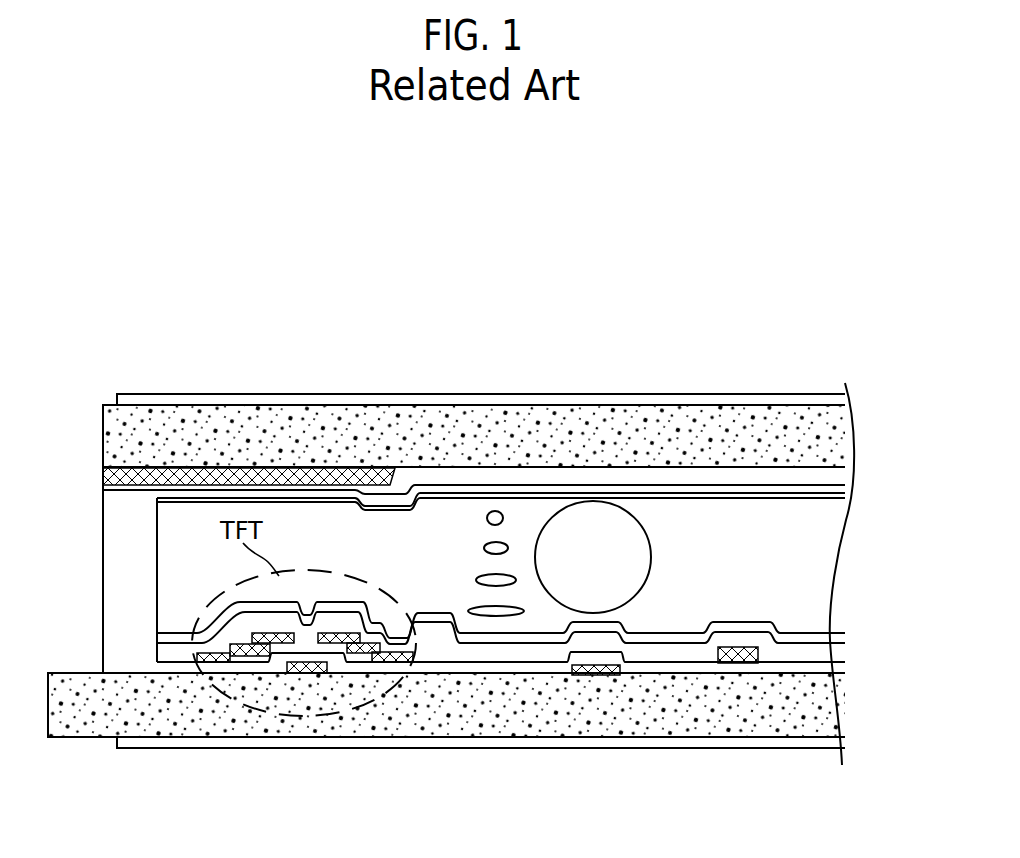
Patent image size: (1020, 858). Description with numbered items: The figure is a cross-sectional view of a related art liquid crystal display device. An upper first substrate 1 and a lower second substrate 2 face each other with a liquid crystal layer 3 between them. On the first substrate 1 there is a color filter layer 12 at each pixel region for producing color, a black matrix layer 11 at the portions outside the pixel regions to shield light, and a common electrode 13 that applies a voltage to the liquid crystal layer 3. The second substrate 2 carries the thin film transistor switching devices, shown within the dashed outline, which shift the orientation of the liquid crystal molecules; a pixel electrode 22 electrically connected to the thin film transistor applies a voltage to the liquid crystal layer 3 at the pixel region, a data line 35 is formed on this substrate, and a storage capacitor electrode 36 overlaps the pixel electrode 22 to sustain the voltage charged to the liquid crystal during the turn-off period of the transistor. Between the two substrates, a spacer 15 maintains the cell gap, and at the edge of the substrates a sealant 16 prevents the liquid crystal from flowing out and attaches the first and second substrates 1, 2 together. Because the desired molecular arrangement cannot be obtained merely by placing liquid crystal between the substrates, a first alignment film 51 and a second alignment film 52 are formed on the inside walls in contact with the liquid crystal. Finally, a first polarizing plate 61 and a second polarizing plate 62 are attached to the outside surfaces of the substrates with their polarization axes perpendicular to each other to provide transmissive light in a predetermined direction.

The first substrate 1 is at (108, 438).
The black matrix layer 11 is at (105, 474).
The color filter layer 12 is at (847, 479).
The common electrode 13 is at (778, 492).
The spacer 15 is at (651, 563).
The sealant 16 is at (110, 560).
The second substrate 2 is at (835, 706).
The pixel electrode 22 is at (422, 648).
The liquid crystal layer 3 is at (832, 584).
The data line 35 is at (745, 664).
The storage capacitor electrode 36 is at (590, 676).
The first alignment film 51 is at (848, 499).
The second alignment film 52 is at (830, 641).
The first polarizing plate 61 is at (580, 393).
The second polarizing plate 62 is at (697, 749).